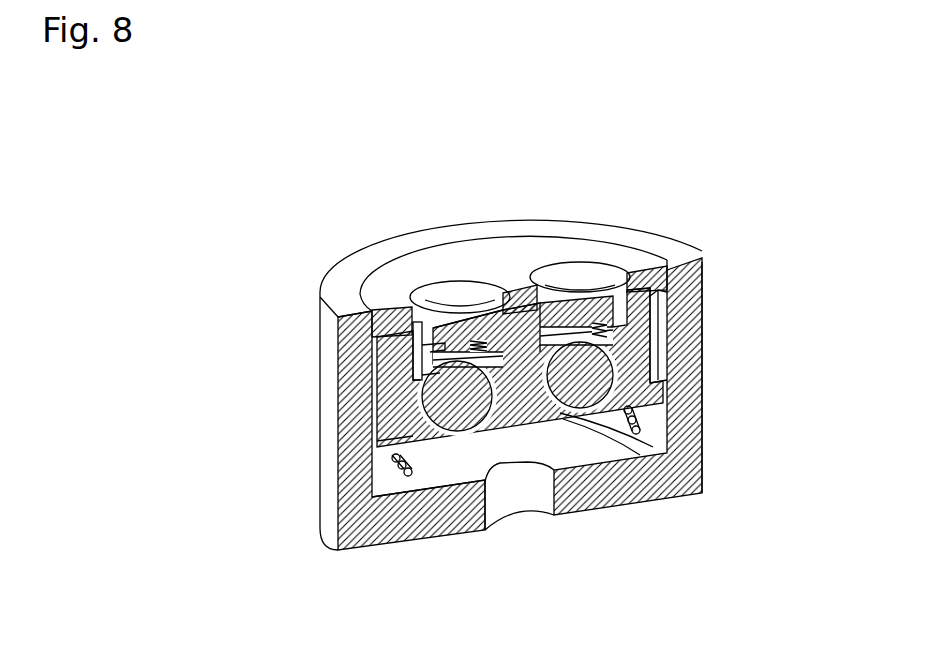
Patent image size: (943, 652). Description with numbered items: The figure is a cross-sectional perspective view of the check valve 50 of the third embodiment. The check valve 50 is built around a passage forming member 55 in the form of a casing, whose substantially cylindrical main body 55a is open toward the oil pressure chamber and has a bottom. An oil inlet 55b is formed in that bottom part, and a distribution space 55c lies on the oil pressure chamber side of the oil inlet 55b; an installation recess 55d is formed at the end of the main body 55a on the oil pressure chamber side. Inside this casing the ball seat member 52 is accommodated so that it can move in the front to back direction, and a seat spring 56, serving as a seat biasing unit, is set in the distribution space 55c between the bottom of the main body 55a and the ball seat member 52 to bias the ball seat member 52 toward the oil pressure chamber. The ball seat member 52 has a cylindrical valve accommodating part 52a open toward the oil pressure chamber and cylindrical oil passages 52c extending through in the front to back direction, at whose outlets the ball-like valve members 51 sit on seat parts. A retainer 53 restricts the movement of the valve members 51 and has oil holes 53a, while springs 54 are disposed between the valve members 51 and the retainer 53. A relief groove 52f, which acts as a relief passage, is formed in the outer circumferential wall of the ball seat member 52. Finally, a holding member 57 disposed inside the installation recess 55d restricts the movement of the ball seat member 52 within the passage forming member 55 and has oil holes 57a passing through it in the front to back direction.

The check valve 50 is at (266, 130).
The valve member 51 is at (613, 378).
The ball seat member 52 is at (632, 408).
The valve accommodating part 52a is at (420, 383).
The oil passage 52c is at (392, 452).
The relief groove 52f is at (656, 297).
The retainer 53 is at (697, 259).
The oil hole 53a is at (410, 310).
The spring 54 is at (607, 333).
The passage forming member 55 is at (633, 497).
The main body 55a is at (678, 488).
The oil inlet 55b is at (517, 493).
The distribution space 55c is at (446, 477).
The installation recess 55d is at (380, 310).
The seat spring 56 is at (410, 447).
The holding member 57 is at (610, 250).
The oil hole 57a is at (462, 288).